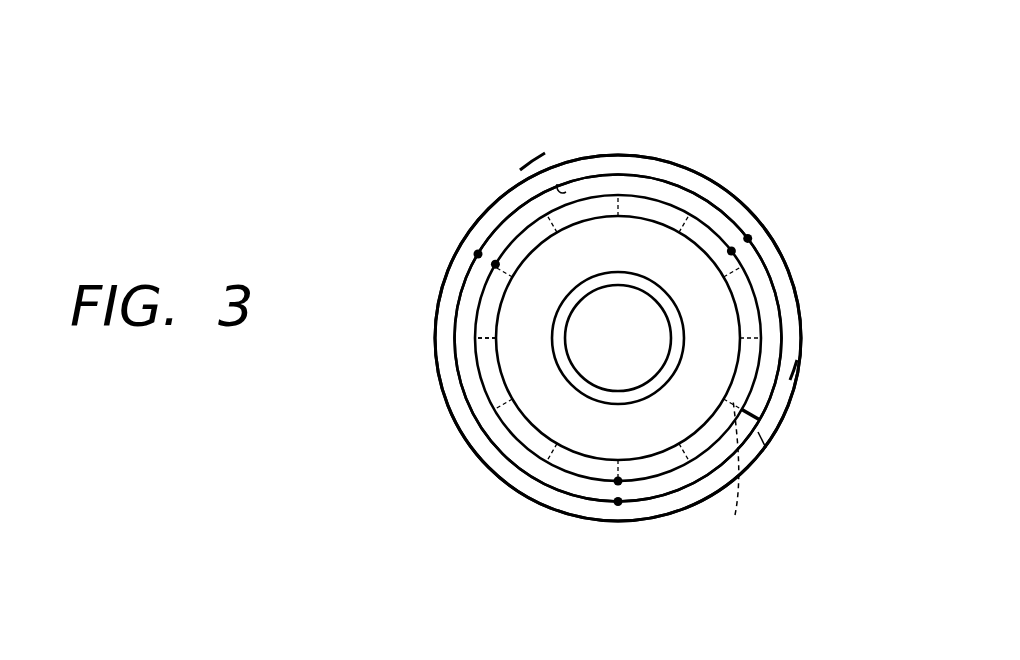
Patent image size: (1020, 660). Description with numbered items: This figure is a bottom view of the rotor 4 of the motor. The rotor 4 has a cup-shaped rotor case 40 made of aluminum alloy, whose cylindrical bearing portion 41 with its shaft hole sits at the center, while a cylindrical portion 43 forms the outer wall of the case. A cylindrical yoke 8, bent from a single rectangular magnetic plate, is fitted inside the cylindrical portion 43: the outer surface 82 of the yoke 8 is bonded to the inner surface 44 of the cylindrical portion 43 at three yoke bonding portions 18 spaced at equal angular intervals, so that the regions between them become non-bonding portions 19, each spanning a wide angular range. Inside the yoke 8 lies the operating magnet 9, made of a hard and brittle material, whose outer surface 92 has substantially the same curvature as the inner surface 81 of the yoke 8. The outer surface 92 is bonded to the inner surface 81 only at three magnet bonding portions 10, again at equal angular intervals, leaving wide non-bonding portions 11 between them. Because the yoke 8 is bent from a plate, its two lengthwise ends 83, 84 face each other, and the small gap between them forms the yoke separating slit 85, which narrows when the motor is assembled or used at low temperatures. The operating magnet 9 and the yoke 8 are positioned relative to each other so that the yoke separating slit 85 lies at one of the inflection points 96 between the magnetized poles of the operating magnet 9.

The rotor 4 is at (754, 160).
The rotor case 40 is at (617, 162).
The cylindrical portion 43 is at (618, 300).
The inner surface of the cylindrical portion 44 is at (560, 186).
The yoke 8 is at (527, 206).
The inner surface of the yoke 81 is at (533, 228).
The outer surface of the yoke 82 is at (533, 182).
The operating magnet 9 is at (478, 356).
The outer surface of the operating magnet 92 is at (476, 338).
The bearing portion 41 is at (570, 373).
The yoke bonding portions 18 is at (478, 254).
The magnet bonding portions 10 is at (495, 264).
The non-bonding portions 11 is at (663, 197).
The non-bonding portions 19 is at (786, 372).
The end of the plate 84 is at (752, 411).
The yoke separating slit 85 is at (775, 423).
The end of the plate 83 is at (762, 440).
The inflection point of the magnetized magnetic poles 96 is at (732, 475).